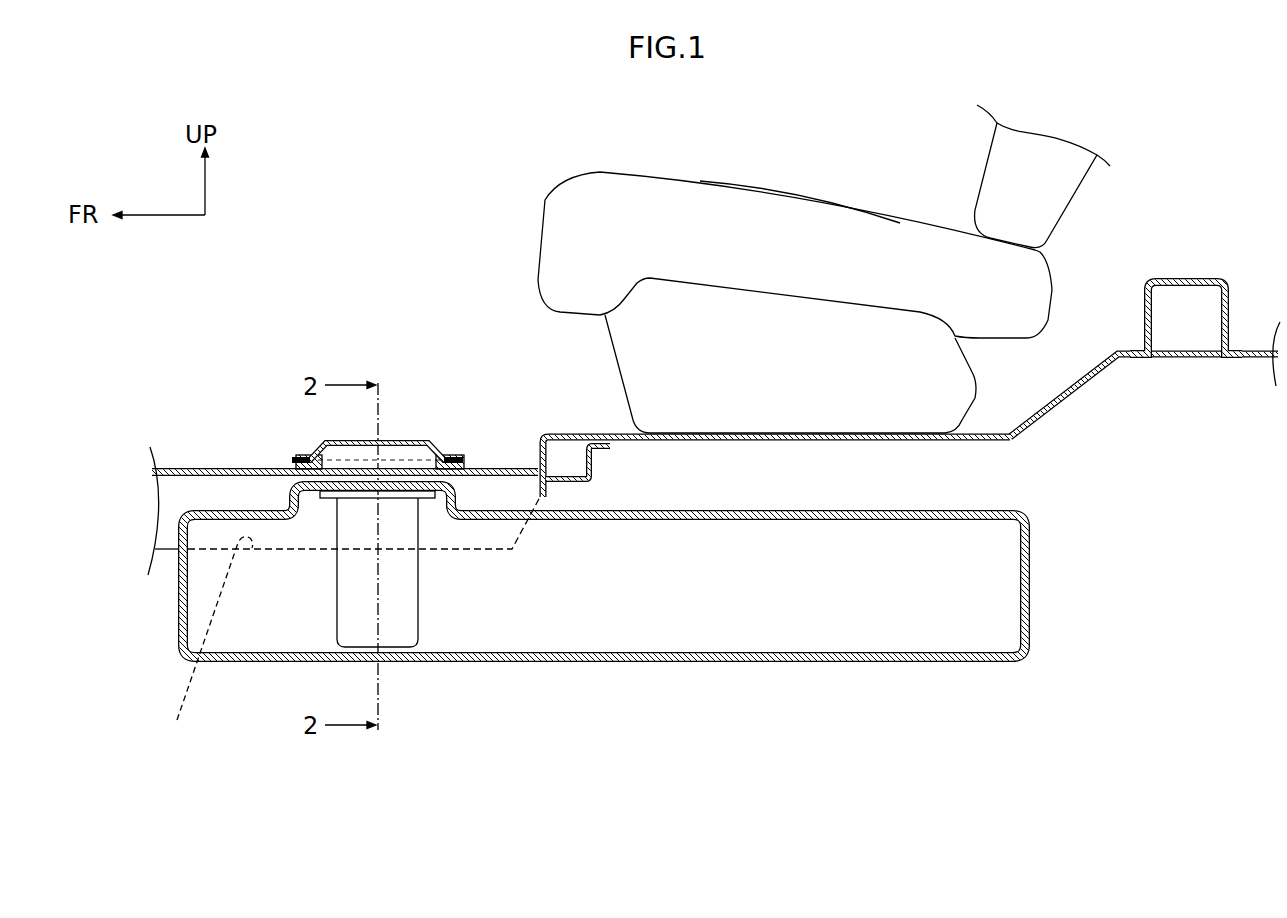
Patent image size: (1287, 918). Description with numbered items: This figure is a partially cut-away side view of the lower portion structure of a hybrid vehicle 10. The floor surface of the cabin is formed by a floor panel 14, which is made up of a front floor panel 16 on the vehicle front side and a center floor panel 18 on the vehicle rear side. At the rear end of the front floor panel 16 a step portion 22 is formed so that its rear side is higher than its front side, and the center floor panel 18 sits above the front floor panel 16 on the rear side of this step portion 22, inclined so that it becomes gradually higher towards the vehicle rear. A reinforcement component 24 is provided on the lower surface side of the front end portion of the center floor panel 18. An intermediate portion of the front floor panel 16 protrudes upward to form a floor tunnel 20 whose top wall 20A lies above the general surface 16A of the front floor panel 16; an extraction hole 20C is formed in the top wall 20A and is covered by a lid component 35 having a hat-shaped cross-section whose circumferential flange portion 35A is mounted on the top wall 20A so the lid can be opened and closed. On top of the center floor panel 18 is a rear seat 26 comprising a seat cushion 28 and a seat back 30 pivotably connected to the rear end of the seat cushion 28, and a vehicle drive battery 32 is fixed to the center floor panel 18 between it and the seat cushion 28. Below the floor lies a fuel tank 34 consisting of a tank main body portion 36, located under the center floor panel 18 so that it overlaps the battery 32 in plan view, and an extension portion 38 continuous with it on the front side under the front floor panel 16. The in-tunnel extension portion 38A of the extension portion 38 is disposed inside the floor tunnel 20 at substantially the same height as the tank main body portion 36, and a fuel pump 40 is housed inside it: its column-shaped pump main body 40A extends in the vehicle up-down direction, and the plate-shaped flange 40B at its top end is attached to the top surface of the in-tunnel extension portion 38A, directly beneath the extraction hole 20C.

The hybrid vehicle 10 is at (333, 272).
The floor panel 14 is at (674, 428).
The front floor panel 16 is at (167, 540).
The general surface 16A is at (188, 636).
The center floor panel 18 is at (972, 428).
The floor tunnel 20 is at (328, 390).
The top wall 20A is at (194, 468).
The extraction hole 20C is at (348, 472).
The step portion 22 is at (540, 450).
The reinforcement component 24 is at (593, 463).
The rear seat 26 is at (715, 182).
The seat cushion 28 is at (842, 209).
The seat back 30 is at (980, 167).
The vehicle drive battery 32 is at (612, 392).
The fuel tank 34 is at (547, 638).
The lid component 35 is at (396, 398).
The flange portion 35A is at (450, 458).
The tank main body portion 36 is at (788, 665).
The extension portion 38 is at (460, 665).
The in-tunnel extension portion 38A is at (178, 600).
The fuel pump 40 is at (369, 547).
The pump main body 40A is at (418, 587).
The flange 40B is at (328, 442).